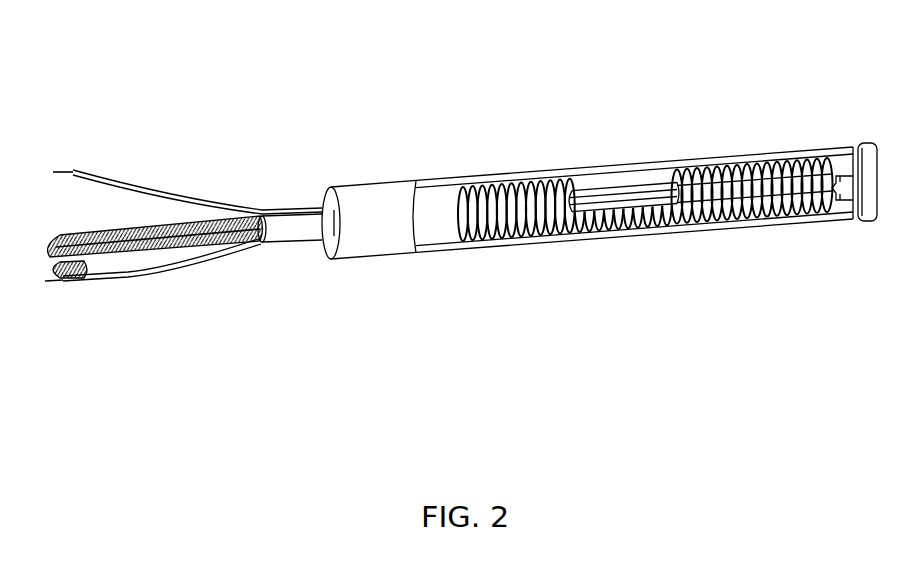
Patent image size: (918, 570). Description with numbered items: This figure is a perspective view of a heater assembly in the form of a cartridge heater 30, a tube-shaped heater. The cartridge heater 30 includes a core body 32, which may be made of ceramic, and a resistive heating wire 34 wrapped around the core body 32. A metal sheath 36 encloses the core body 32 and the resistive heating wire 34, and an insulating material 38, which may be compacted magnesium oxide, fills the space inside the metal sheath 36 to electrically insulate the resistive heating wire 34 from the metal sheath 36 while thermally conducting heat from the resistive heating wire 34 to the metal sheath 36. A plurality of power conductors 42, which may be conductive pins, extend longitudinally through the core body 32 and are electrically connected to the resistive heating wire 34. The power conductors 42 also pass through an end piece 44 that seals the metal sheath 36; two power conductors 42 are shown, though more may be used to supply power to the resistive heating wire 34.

The cartridge heater 30 is at (612, 48).
The core body 32 is at (516, 233).
The resistive heating wire 34 is at (732, 211).
The metal sheath 36 is at (768, 158).
The insulating material 38 is at (483, 184).
The power conductors 42 is at (650, 198).
The end piece 44 is at (322, 191).